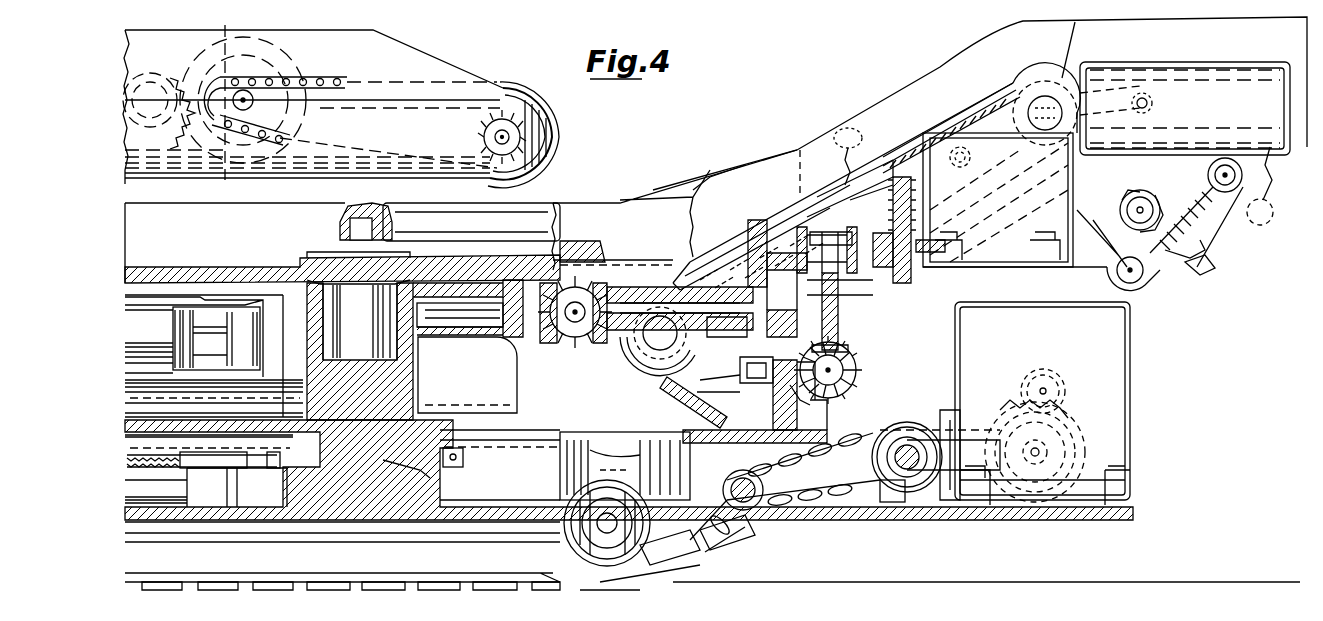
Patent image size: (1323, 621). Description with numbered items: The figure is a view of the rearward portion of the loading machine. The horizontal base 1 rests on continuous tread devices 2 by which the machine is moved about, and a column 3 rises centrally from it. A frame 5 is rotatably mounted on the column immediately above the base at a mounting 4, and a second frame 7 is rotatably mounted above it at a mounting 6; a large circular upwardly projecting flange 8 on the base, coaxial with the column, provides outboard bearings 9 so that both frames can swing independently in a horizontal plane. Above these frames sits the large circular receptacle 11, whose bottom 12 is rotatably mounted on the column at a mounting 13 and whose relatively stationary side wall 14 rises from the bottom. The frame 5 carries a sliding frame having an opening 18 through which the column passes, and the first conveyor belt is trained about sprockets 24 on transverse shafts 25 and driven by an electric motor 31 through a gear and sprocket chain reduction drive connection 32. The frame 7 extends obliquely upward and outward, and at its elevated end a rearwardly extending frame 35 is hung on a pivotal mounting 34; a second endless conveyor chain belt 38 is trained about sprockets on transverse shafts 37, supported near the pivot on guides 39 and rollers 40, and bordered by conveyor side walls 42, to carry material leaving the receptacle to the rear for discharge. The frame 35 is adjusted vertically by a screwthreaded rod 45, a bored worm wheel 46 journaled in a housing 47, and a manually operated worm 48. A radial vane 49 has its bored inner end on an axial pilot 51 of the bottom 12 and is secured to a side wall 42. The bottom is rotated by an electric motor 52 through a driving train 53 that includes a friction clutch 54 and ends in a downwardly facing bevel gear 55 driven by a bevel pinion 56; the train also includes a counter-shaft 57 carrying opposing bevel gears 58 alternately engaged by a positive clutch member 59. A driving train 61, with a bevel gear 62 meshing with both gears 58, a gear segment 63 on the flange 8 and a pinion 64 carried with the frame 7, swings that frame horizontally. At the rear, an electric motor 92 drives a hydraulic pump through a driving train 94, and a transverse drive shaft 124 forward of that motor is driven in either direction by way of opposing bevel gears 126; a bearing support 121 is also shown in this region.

The base 1 is at (397, 522).
The continuous tread devices 2 is at (425, 590).
The column 3 is at (423, 475).
The rotatable mounting 4 is at (460, 470).
The frame 5 is at (522, 450).
The rotatable mounting 6 is at (730, 601).
The second frame 7 is at (482, 358).
The circular upwardly projecting flange 8 is at (610, 445).
The outboard bearings 9 is at (720, 515).
The receptacle 11 is at (185, 205).
The bottom 12 is at (228, 255).
The rotatable mounting 13 is at (290, 256).
The side wall 14 is at (540, 196).
The opening 18 is at (517, 385).
The sprockets 24 is at (553, 150).
The transverse shafts 25 is at (508, 135).
The electric motor 31 is at (205, 25).
The gear and sprocket chain reduction drive connection 32 is at (325, 77).
The pivotal mounting 34 is at (1060, 100).
The frame 35 is at (1198, 58).
The transverse shafts 37 is at (640, 355).
The second endless conveyor chain belt 38 is at (848, 156).
The guides 39 is at (1260, 186).
The rollers 40 is at (1153, 105).
The conveyor side walls 42 is at (935, 58).
The screwthreaded rod 45 is at (1150, 280).
The bored worm wheel 46 is at (1205, 250).
The housing 47 is at (1212, 270).
The manually operated worm 48 is at (1143, 190).
The radial vane 49 is at (471, 222).
The axial pilot 51 is at (380, 205).
The electric motor 52 is at (980, 270).
The driving train 53 is at (906, 280).
The friction clutch 54 is at (705, 268).
The bevel gear 55 is at (520, 247).
The bevel pinion 56 is at (553, 337).
The counter-shaft 57 is at (728, 236).
The opposing bevel gears 58 is at (875, 275).
The positive clutch member 59 is at (913, 150).
The driving train 61 is at (858, 373).
The bevel gear 62 is at (845, 320).
The gear segment 63 is at (780, 470).
The pinion 64 is at (830, 420).
The electric motor 92 is at (1115, 350).
The driving train 94 is at (1066, 392).
The bearing 121 is at (945, 415).
The transverse drive shaft 124 is at (940, 425).
The opposing bevel gears 126 is at (858, 382).